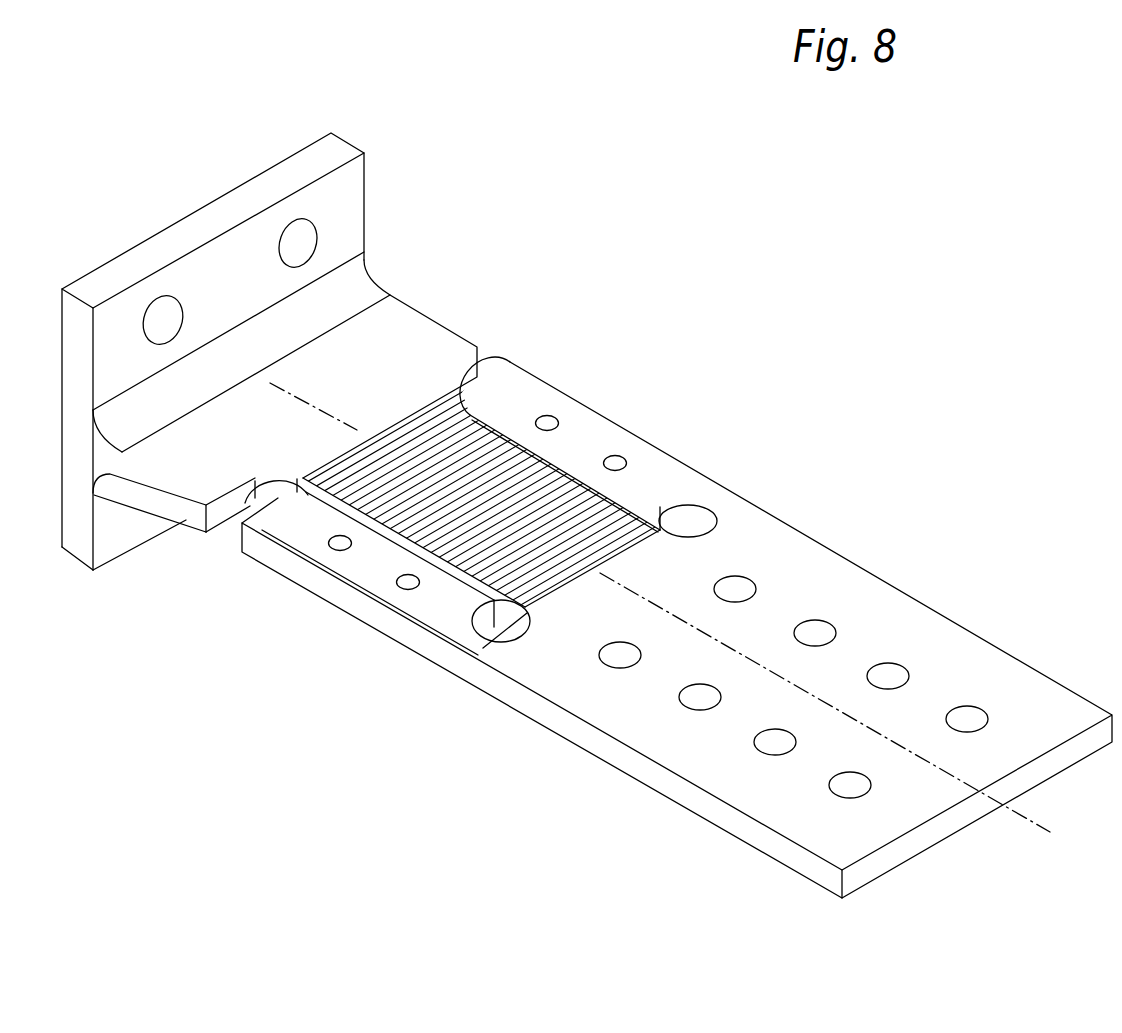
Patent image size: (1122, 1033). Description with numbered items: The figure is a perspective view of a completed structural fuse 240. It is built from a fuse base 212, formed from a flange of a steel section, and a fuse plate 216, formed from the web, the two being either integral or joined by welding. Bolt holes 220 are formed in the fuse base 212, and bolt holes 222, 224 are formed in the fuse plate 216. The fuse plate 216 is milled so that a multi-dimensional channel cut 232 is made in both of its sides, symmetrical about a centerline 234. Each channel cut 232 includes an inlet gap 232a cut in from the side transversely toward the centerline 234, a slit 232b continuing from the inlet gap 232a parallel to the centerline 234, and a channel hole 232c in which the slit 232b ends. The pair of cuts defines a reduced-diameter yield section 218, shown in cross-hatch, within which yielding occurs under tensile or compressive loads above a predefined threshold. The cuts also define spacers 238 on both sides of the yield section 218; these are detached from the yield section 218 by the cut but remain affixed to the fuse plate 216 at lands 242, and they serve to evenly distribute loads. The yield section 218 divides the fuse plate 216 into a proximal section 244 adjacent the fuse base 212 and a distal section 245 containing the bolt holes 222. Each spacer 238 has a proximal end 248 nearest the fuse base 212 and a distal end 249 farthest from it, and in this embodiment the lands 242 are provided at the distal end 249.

The fuse base 212 is at (352, 142).
The fuse plate 216 is at (430, 323).
The yield section 218 is at (456, 529).
The bolt holes 220 is at (317, 230).
The bolt holes 222 is at (823, 628).
The bolt hole 224 is at (625, 458).
The multi-dimensional channel cut 232 is at (507, 433).
The inlet gap 232a is at (488, 373).
The slit 232b is at (630, 503).
The channel hole 232c is at (717, 515).
The centerline 234 is at (1038, 831).
The spacers 238 is at (603, 451).
The structural fuse 240 is at (740, 298).
The lands 242 is at (715, 500).
The proximal section 244 is at (397, 349).
The distal section 245 is at (1039, 715).
The proximal end 248 is at (288, 520).
The distal end 249 is at (462, 616).